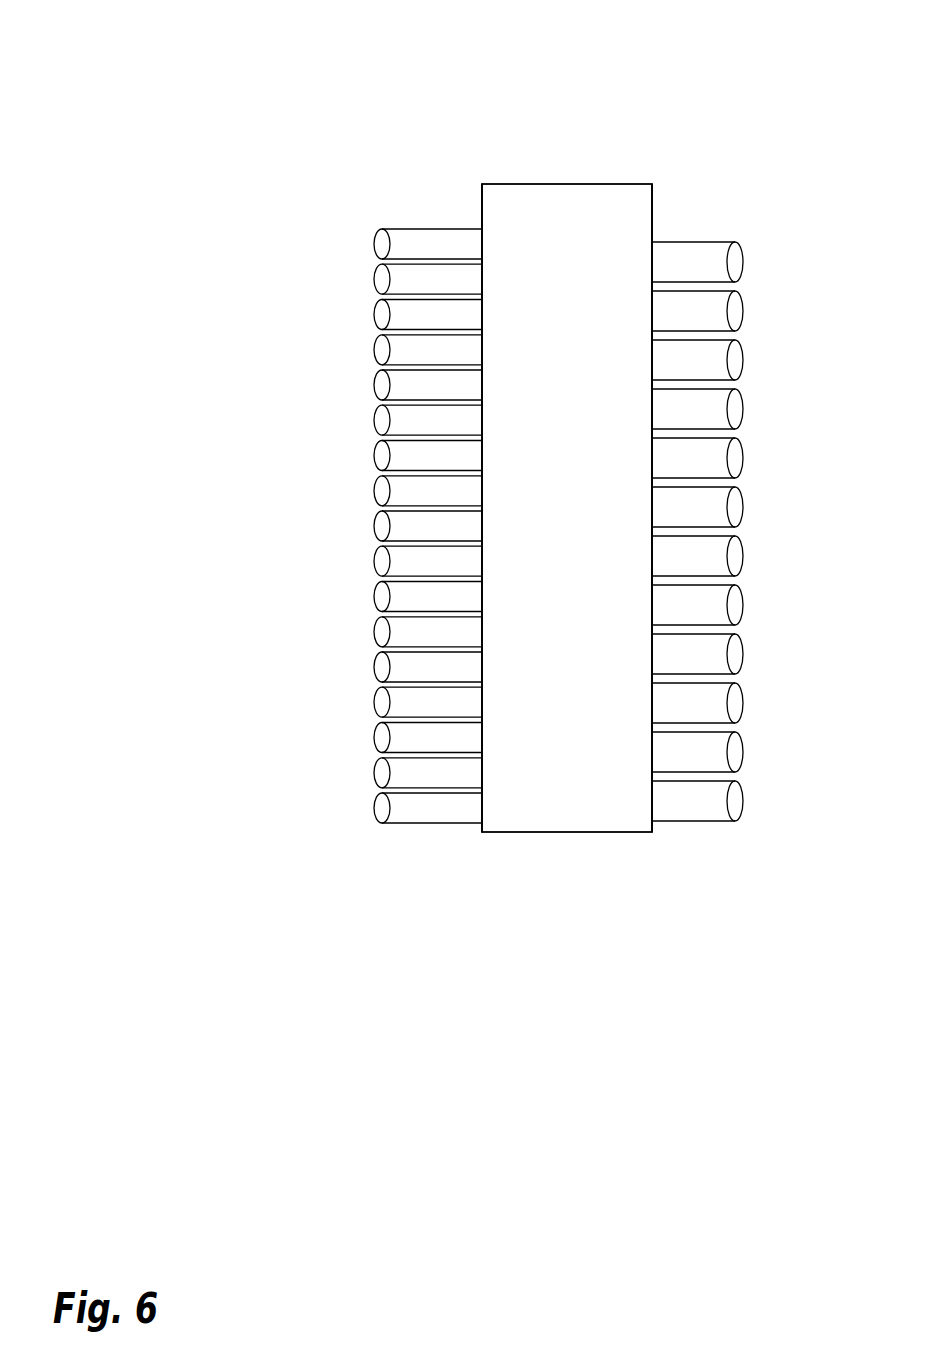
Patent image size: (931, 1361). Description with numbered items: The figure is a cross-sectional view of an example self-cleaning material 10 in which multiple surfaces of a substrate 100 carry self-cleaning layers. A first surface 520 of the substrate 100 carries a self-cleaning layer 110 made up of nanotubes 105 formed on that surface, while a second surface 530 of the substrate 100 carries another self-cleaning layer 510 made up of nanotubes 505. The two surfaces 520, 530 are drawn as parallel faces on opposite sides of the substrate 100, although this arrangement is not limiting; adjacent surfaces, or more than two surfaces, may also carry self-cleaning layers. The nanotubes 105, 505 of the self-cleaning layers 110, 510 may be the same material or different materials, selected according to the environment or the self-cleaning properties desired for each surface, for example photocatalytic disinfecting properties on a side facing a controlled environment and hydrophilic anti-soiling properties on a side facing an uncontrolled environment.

The self-cleaning material 10 is at (375, 126).
The substrate 100 is at (590, 523).
The nanotubes 105 is at (743, 364).
The self-cleaning layer 110 is at (737, 590).
The nanotubes 505 is at (375, 454).
The self-cleaning layer 510 is at (383, 581).
The first surface 520 is at (654, 210).
The second surface 530 is at (482, 197).